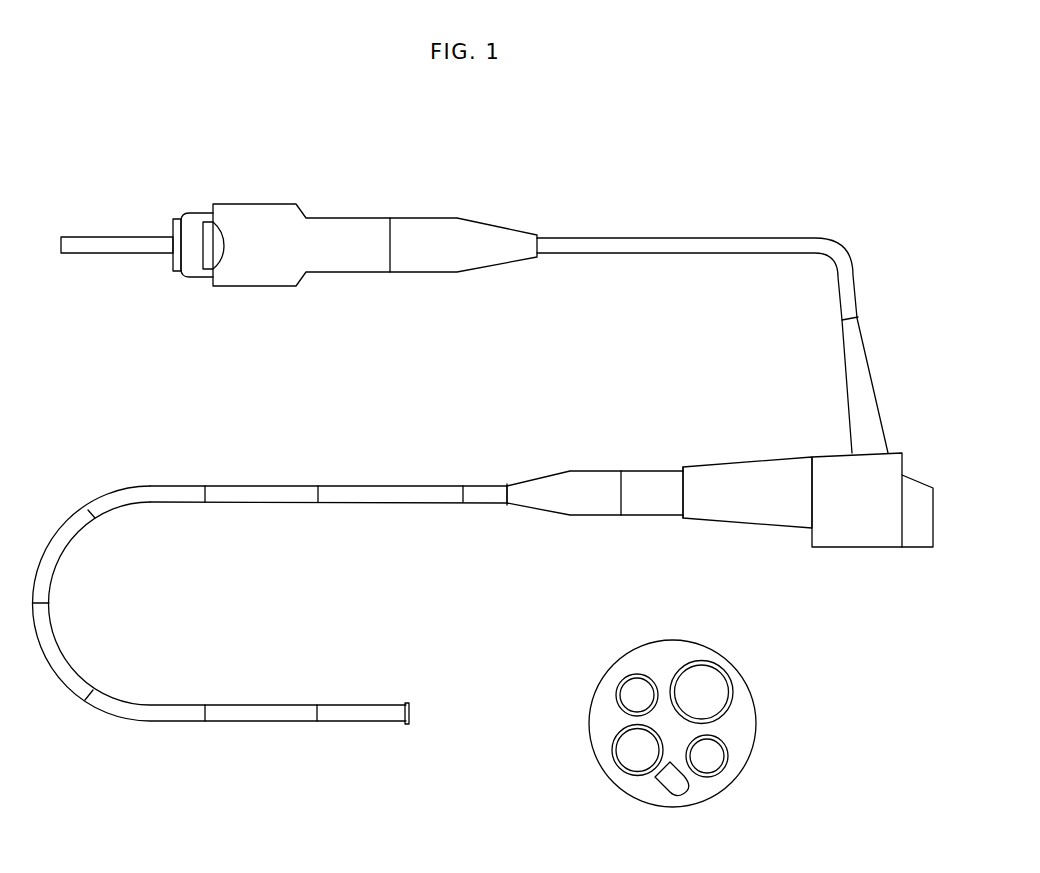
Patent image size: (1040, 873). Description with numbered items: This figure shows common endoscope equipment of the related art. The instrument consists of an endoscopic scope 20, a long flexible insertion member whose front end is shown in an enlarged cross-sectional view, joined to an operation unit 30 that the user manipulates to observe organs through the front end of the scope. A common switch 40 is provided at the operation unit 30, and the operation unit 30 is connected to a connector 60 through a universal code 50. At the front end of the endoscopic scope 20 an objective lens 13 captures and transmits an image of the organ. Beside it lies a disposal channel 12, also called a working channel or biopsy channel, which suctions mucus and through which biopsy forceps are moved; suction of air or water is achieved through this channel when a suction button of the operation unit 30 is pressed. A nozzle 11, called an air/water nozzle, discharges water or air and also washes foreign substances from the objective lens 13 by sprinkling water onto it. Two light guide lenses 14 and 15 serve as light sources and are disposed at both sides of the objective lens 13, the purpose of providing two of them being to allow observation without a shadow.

The nozzle 11 is at (676, 783).
The disposal channel 12 is at (702, 675).
The objective lens 13 is at (627, 752).
The light guide lens 14 is at (713, 755).
The light guide lens 15 is at (635, 692).
The endoscopic scope 20 is at (65, 662).
The operation unit 30 is at (766, 477).
The common switch 40 is at (921, 513).
The universal code 50 is at (793, 237).
The connector 60 is at (344, 232).